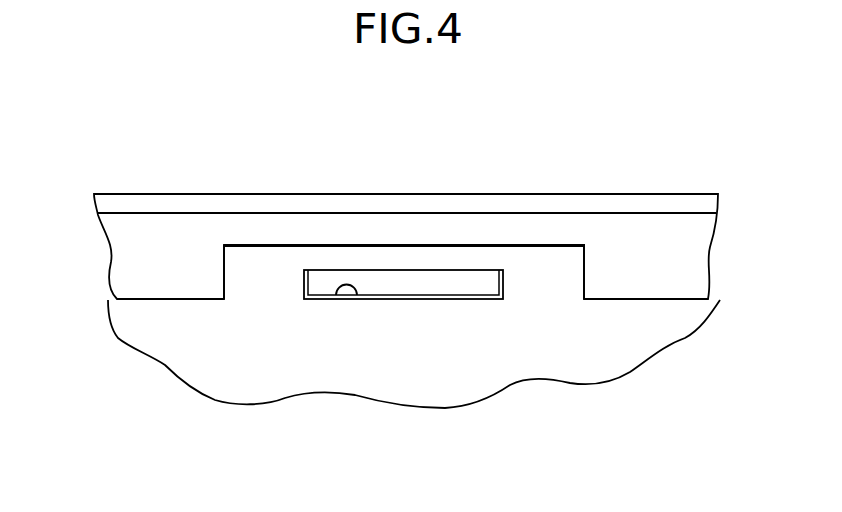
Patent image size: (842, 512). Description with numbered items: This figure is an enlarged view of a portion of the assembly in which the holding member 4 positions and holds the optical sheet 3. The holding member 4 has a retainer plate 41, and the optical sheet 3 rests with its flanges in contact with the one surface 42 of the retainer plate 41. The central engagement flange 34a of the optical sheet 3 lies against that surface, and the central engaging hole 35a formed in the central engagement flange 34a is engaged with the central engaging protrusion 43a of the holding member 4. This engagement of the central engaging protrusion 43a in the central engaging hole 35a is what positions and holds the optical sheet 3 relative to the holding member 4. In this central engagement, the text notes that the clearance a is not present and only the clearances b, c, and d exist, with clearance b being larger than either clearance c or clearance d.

The optical sheet 3 is at (538, 360).
The holding member 4 is at (565, 196).
The retainer plate 41 is at (426, 256).
The one surface 42 is at (404, 162).
The central engaging protrusion 43a is at (372, 282).
The central engagement flange 34a is at (262, 268).
The central engaging hole 35a is at (337, 287).